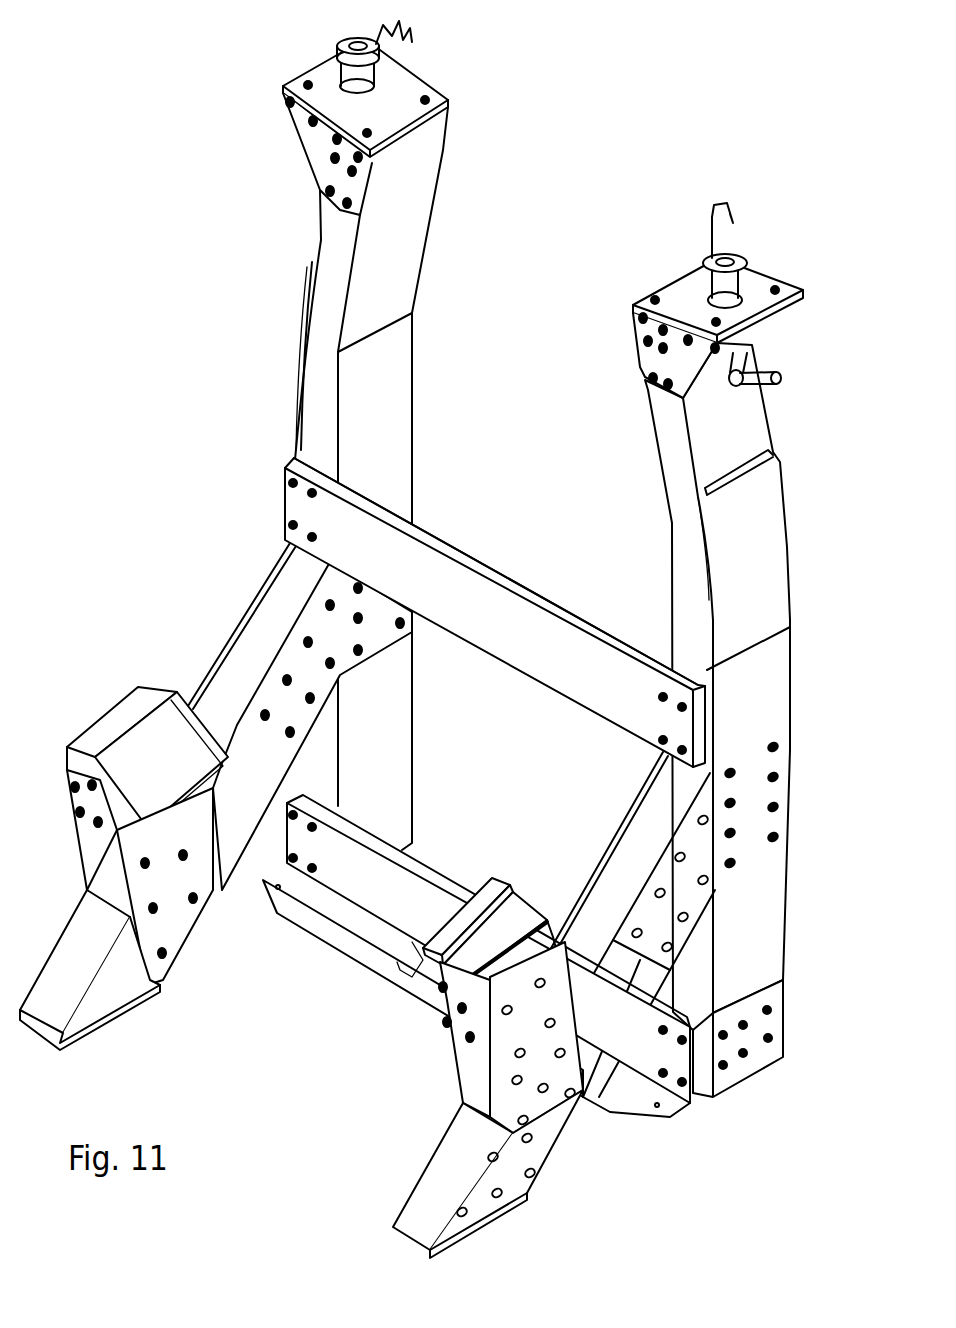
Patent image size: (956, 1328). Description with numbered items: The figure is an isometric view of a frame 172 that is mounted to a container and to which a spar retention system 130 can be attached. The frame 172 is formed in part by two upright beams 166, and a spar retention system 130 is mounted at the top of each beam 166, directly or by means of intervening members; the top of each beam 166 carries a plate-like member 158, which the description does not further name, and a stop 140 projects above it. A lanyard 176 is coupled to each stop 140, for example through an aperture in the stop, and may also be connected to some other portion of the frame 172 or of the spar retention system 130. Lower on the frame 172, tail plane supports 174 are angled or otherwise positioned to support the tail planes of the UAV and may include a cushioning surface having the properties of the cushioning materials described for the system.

The spar retention system 130 is at (266, 63).
The stop 140 is at (352, 50).
The top mounting plate 158 is at (353, 105).
The beam 166 is at (399, 387).
The frame 172 is at (202, 607).
The tail plane support 174 is at (190, 767).
The flexible cable 176 is at (410, 25).